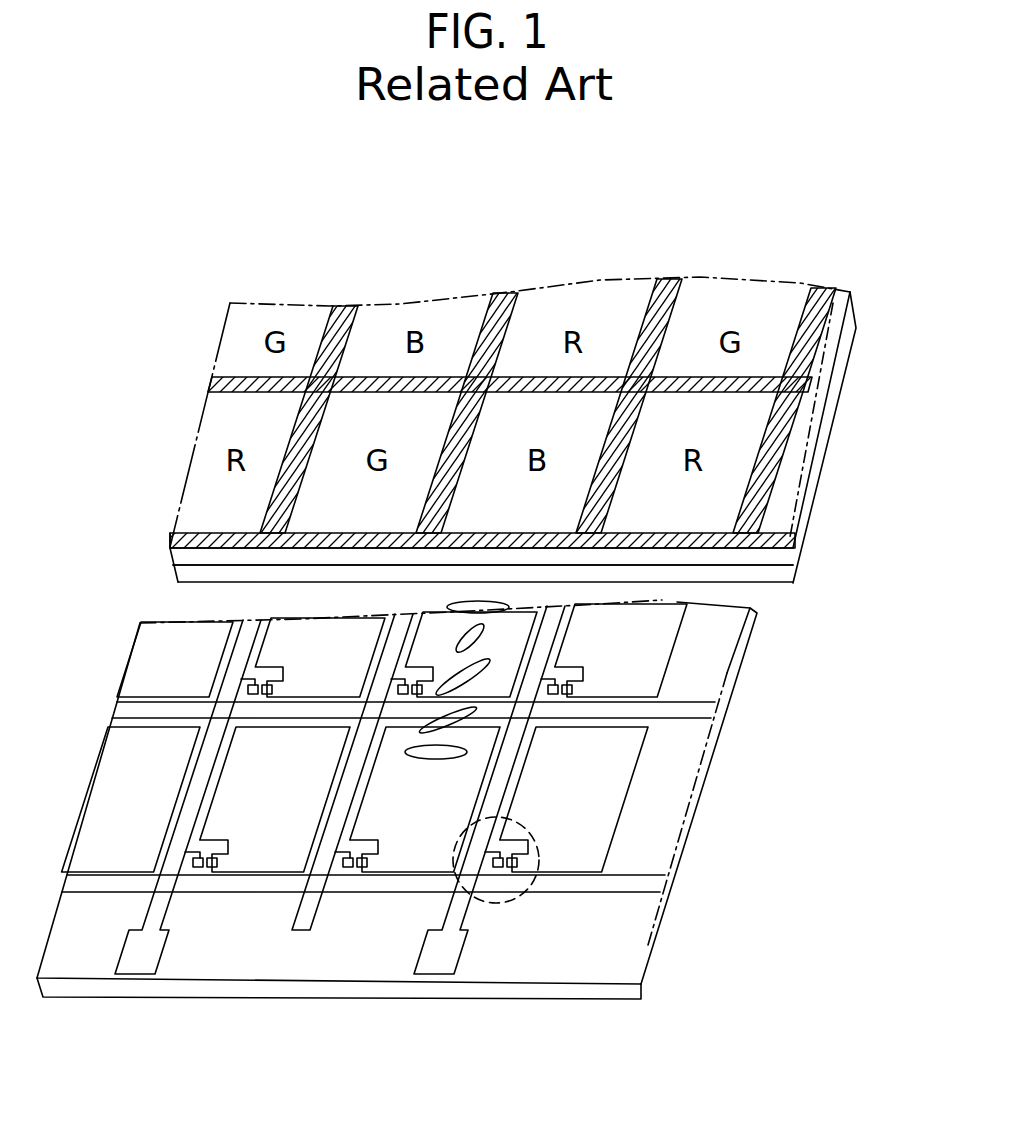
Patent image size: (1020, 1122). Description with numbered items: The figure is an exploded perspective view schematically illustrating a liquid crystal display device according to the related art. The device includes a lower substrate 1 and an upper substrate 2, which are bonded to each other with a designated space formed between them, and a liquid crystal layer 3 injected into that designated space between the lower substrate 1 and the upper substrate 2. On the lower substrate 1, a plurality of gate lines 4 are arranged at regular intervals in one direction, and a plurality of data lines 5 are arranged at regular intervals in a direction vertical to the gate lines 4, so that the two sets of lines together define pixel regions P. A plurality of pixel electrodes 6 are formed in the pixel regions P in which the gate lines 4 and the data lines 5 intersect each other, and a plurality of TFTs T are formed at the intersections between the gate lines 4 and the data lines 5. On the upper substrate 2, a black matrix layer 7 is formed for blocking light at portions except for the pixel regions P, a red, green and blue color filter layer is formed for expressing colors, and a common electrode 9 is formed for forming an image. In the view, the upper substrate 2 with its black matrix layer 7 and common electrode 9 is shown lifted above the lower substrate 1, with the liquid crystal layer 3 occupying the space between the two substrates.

The lower substrate 1 is at (595, 990).
The upper substrate 2 is at (770, 557).
The liquid crystal layer 3 is at (490, 663).
The gate lines 4 is at (613, 887).
The data lines 5 is at (447, 913).
The pixel electrodes 6 is at (620, 817).
The black matrix layer 7 is at (818, 383).
The common electrode 9 is at (773, 573).
The pixel regions P is at (667, 762).
The TFTs T is at (495, 910).